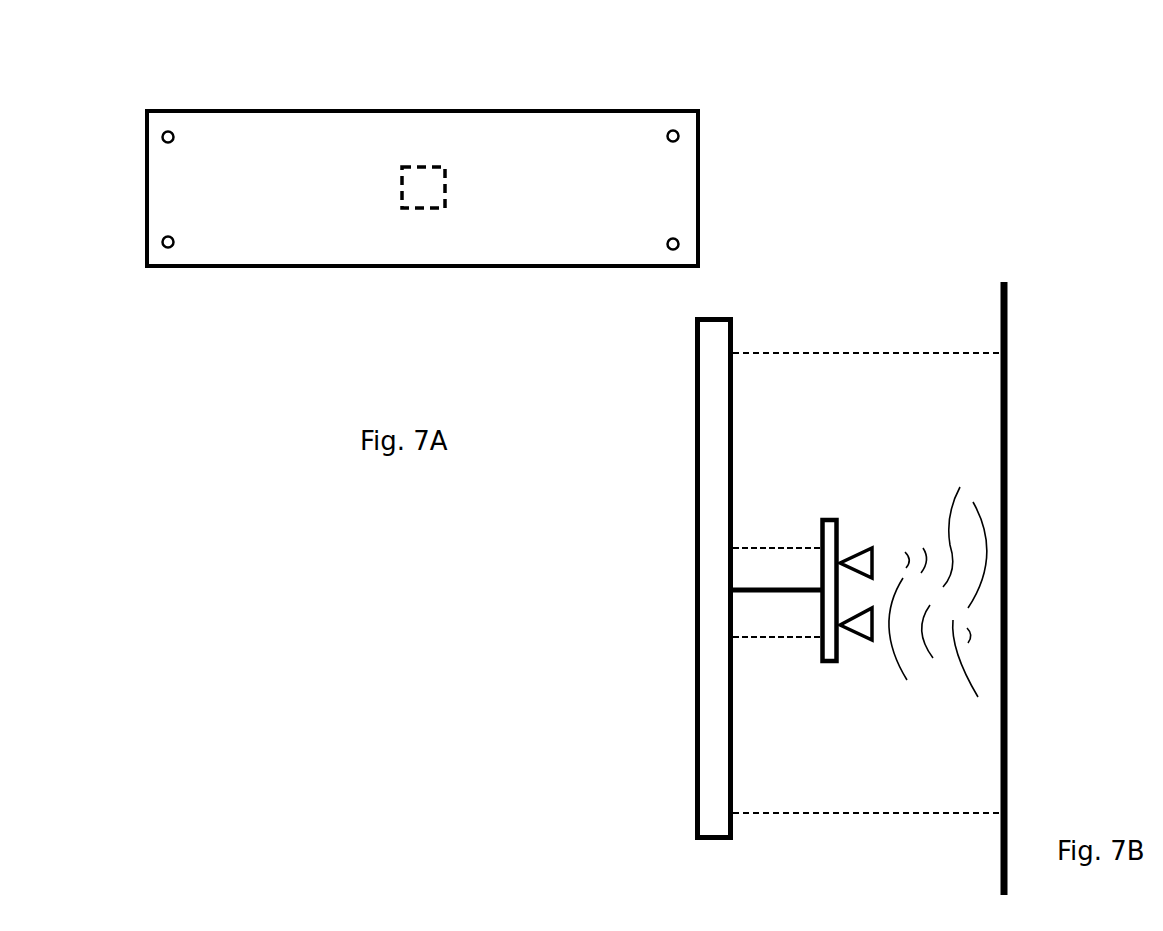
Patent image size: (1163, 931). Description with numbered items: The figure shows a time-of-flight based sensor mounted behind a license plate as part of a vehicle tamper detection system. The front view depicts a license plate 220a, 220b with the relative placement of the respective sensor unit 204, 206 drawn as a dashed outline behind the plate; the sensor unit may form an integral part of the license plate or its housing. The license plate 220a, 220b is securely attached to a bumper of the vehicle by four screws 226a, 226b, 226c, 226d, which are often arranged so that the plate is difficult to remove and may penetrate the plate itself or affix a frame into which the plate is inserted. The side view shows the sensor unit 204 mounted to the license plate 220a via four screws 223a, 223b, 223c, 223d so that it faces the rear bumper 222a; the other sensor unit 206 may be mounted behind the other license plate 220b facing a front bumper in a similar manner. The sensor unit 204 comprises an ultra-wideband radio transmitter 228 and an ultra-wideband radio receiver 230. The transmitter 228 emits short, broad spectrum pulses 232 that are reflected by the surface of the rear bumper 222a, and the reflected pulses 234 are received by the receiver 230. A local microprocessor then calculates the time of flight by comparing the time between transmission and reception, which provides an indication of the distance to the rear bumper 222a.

In FIG. 7A, the license plate 220a is at (439, 215).
In FIG. 7B, the license plate 220a is at (695, 635).
In FIG. 7A, the license plate 220b is at (309, 296).
In FIG. 7A, the screw 226a is at (164, 132).
In FIG. 7B, the screw 226a is at (867, 582).
In FIG. 7A, the screw 226b is at (680, 135).
In FIG. 7B, the screw 226b is at (850, 848).
In FIG. 7A, the screw 226c is at (165, 248).
In FIG. 7A, the screw 226d is at (680, 243).
In FIG. 7A, the sensor unit 204 is at (483, 250).
In FIG. 7B, the sensor unit 204 is at (827, 517).
In FIG. 7A, the sensor unit 206 is at (445, 208).
In FIG. 7B, the rear bumper 222a is at (1008, 438).
In FIG. 7B, the screw 223a is at (777, 493).
In FIG. 7B, the screw 223b is at (777, 548).
In FIG. 7B, the screw 223c is at (777, 687).
In FIG. 7B, the screw 223d is at (778, 638).
In FIG. 7B, the UWB radio transmitter 228 is at (868, 552).
In FIG. 7B, the UWB radio receiver 230 is at (853, 628).
In FIG. 7B, the pulses 232 is at (946, 528).
In FIG. 7B, the reflected pulses 234 is at (948, 658).